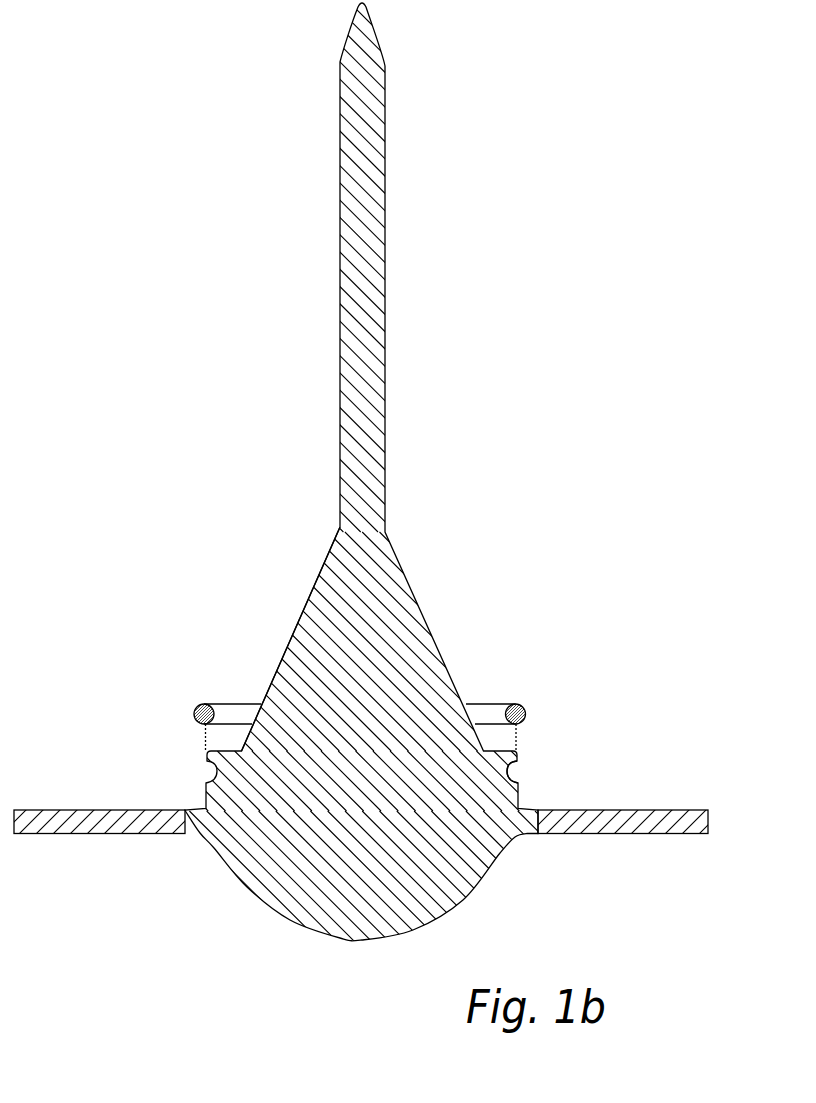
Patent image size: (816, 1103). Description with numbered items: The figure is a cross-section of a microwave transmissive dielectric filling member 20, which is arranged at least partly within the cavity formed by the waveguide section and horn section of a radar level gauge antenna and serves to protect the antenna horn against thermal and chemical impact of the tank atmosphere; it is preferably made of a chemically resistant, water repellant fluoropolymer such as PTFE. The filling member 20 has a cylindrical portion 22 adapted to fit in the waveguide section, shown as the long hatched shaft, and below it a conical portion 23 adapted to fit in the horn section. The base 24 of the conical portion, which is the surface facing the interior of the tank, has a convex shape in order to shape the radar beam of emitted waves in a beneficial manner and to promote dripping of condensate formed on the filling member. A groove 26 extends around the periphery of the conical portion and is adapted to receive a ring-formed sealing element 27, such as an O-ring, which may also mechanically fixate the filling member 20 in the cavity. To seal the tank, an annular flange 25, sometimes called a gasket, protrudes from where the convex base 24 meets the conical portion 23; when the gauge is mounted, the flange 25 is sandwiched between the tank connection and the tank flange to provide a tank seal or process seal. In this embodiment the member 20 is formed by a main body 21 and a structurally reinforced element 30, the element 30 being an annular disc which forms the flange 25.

The dielectric filling member 20 is at (516, 476).
The main body 21 is at (433, 642).
The cylindrical portion 22 is at (375, 335).
The conical portion 23 is at (303, 645).
The base 24 is at (466, 902).
The annular flange 25 is at (597, 809).
The groove 26 is at (517, 773).
The ring-formed sealing element 27 is at (196, 707).
The structurally reinforced element 30 is at (673, 819).